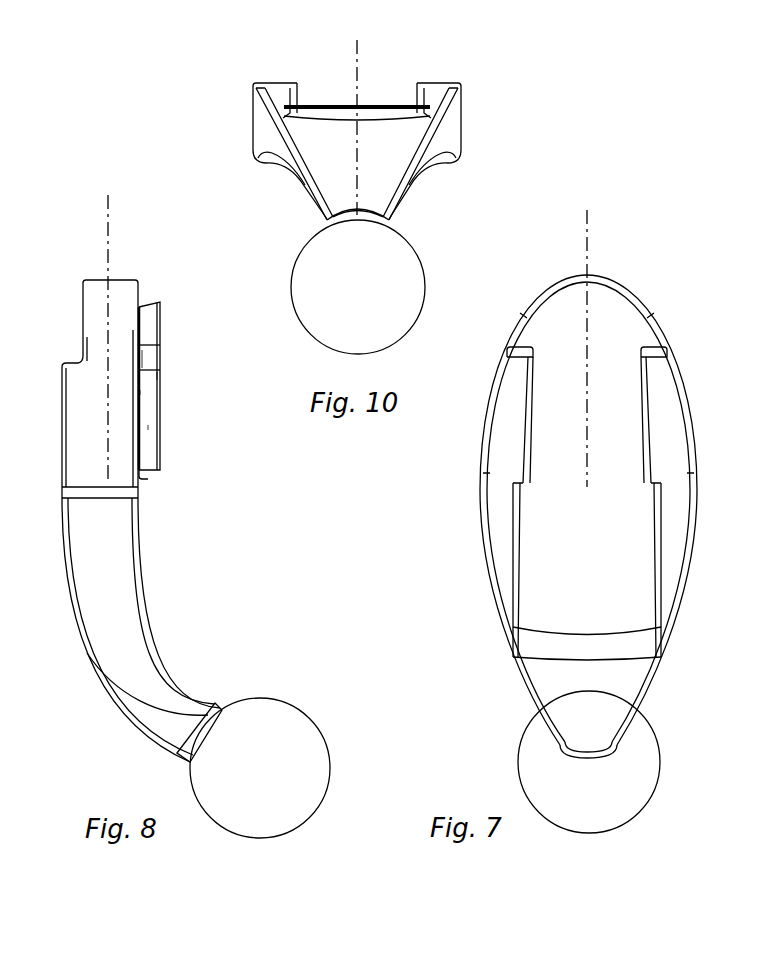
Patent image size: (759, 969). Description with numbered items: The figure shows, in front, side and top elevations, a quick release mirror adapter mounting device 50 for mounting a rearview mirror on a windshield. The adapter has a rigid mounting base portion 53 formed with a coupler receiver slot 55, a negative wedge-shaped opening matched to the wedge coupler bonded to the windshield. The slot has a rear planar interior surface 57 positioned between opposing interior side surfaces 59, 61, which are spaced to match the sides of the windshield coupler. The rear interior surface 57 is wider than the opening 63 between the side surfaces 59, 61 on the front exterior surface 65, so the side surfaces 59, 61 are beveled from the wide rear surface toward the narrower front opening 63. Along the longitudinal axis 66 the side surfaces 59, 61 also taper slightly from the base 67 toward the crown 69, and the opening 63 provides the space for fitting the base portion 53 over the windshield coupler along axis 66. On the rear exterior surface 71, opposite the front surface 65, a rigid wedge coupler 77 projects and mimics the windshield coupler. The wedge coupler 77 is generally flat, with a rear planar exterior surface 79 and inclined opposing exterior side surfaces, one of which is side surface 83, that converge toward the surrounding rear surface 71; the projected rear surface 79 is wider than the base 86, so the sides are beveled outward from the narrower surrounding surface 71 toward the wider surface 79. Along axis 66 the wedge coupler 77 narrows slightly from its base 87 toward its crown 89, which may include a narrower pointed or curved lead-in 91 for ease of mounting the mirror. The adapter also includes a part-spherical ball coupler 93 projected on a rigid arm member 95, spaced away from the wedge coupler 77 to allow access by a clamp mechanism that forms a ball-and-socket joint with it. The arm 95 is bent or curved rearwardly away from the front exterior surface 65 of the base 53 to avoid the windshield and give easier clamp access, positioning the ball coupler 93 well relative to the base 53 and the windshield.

In FIG. 10, the quick release mirror adapter mounting device 50 is at (387, 147).
In FIG. 7, the quick release mirror adapter mounting device 50 is at (660, 680).
In FIG. 10, the mounting base portion 53 is at (263, 128).
In FIG. 7, the mounting base portion 53 is at (498, 622).
In FIG. 10, the coupler receiver slot 55 is at (338, 105).
In FIG. 8, the coupler receiver slot 55 is at (80, 358).
In FIG. 7, the coupler receiver slot 55 is at (622, 362).
In FIG. 10, the rear planar interior surface 57 is at (377, 106).
In FIG. 7, the rear planar interior surface 57 is at (630, 416).
In FIG. 10, the interior side surface 59 is at (296, 92).
In FIG. 7, the interior side surface 59 is at (528, 390).
In FIG. 10, the interior side surface 61 is at (420, 89).
In FIG. 7, the interior side surface 61 is at (643, 383).
In FIG. 10, the opening 63 is at (398, 92).
In FIG. 7, the opening 63 is at (607, 496).
In FIG. 10, the front exterior surface 65 is at (437, 87).
In FIG. 8, the front exterior surface 65 is at (62, 401).
In FIG. 7, the front exterior surface 65 is at (668, 432).
In FIG. 10, the longitudinal axis 66 is at (360, 66).
In FIG. 8, the longitudinal axis 66 is at (108, 222).
In FIG. 7, the longitudinal axis 66 is at (587, 232).
In FIG. 7, the base 67 is at (574, 510).
In FIG. 7, the crown 69 is at (610, 348).
In FIG. 8, the rear exterior surface 71 is at (142, 368).
In FIG. 10, the wedge coupler 77 is at (294, 180).
In FIG. 8, the wedge coupler 77 is at (160, 333).
In FIG. 8, the rear planar exterior surface 79 is at (160, 375).
In FIG. 8, the exterior side surface 83 is at (148, 427).
In FIG. 8, the base 86 is at (140, 392).
In FIG. 8, the base 87 is at (148, 477).
In FIG. 8, the crown 89 is at (148, 305).
In FIG. 8, the lead-in 91 is at (150, 317).
In FIG. 10, the ball coupler 93 is at (371, 301).
In FIG. 8, the ball coupler 93 is at (275, 781).
In FIG. 7, the ball coupler 93 is at (603, 804).
In FIG. 10, the arm member 95 is at (403, 200).
In FIG. 8, the arm member 95 is at (117, 703).
In FIG. 7, the arm member 95 is at (603, 716).